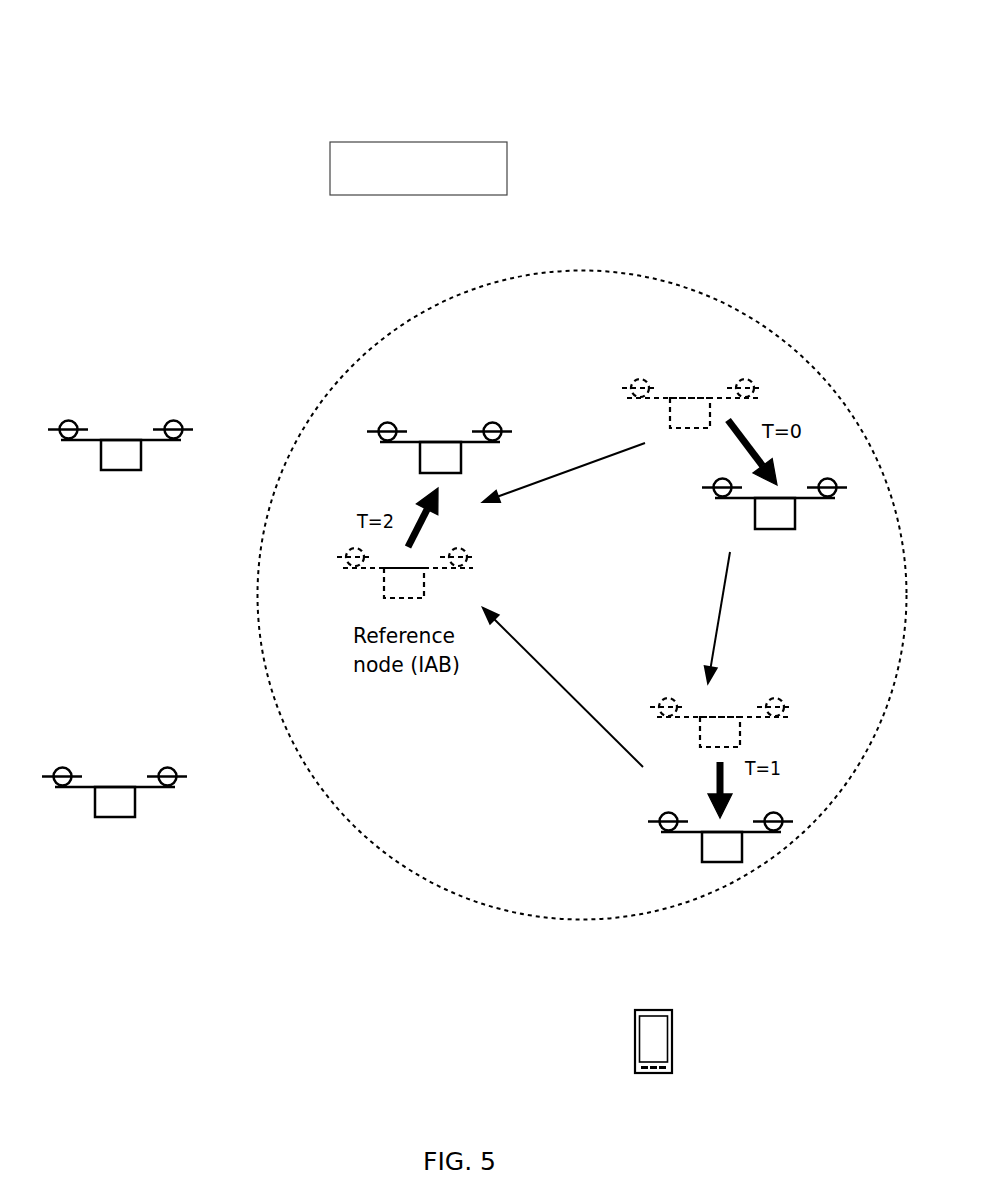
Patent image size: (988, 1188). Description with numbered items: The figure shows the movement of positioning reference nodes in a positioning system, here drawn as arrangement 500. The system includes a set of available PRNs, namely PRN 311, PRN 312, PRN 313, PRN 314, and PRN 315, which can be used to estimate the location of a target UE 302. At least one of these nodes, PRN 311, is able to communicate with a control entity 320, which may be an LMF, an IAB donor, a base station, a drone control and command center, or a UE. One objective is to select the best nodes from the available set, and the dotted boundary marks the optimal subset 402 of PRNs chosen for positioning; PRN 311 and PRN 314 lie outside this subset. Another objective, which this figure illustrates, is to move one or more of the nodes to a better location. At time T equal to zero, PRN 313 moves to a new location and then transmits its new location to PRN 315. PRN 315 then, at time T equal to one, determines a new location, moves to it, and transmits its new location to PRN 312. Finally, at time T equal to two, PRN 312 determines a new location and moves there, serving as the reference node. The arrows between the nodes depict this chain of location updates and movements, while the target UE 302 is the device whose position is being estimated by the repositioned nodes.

The positioning scenario 500 is at (104, 85).
The control entity 320 is at (440, 142).
The optimal subset of PRNs 402 is at (617, 283).
The PRN 311 is at (124, 425).
The PRN 312 is at (437, 432).
The PRN 313 is at (795, 485).
The PRN 314 is at (117, 770).
The PRN 315 is at (743, 820).
The target UE 302 is at (652, 1008).